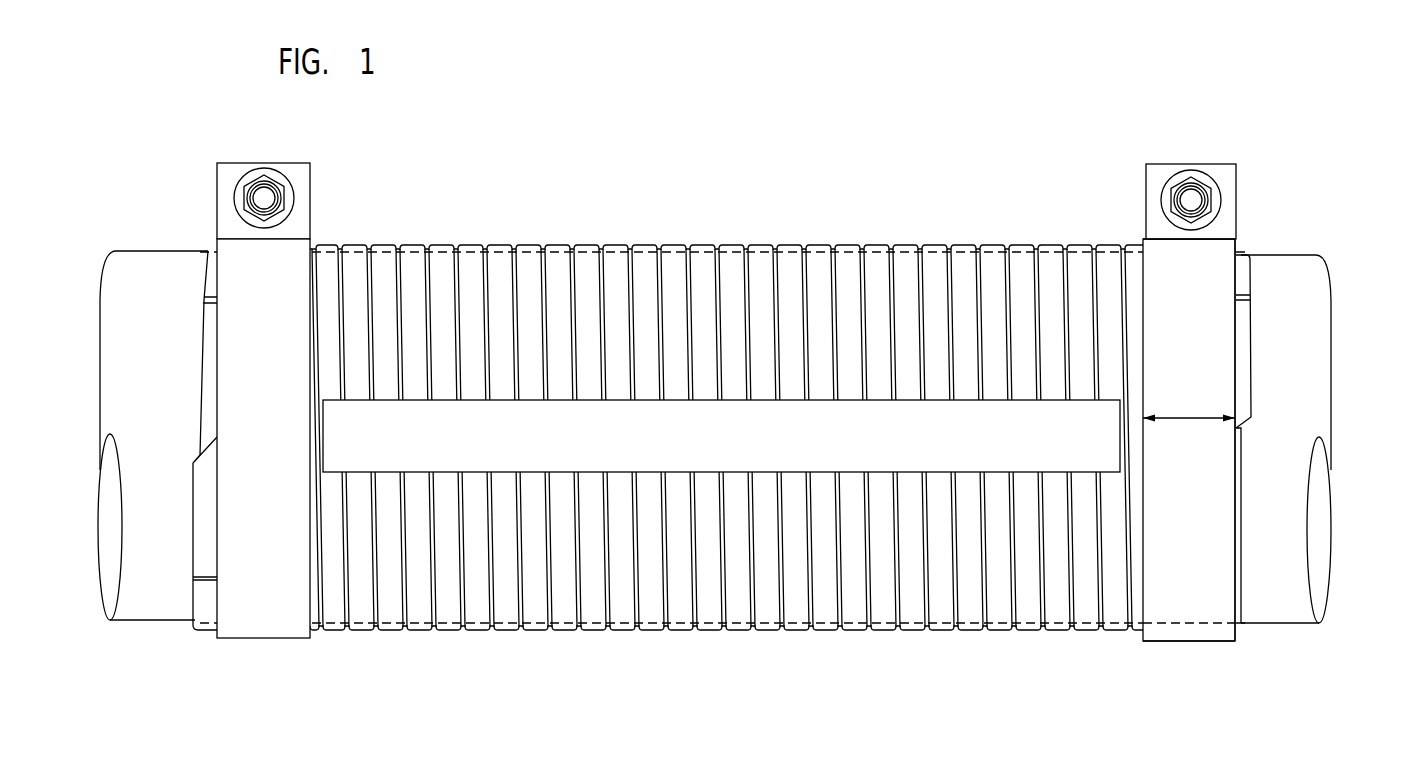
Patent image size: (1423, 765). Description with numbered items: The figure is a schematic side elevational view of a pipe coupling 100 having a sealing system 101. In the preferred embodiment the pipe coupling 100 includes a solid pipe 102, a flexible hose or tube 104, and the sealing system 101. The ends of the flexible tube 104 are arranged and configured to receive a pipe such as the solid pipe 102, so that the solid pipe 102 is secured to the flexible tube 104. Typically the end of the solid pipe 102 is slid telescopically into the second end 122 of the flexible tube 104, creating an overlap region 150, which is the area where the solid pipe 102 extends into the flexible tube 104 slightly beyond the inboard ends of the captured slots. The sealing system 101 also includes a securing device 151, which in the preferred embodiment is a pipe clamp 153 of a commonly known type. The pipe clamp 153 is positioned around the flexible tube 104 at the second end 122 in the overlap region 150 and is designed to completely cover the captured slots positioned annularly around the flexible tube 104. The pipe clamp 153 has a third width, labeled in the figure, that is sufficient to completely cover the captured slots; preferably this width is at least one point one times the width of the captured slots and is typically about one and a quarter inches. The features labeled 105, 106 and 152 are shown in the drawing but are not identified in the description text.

The pipe coupling 100 is at (1266, 126).
The sealing system 101 is at (1136, 649).
The solid pipe 102 is at (164, 282).
The flexible hose or tube 104 is at (920, 270).
The second end of corrugated hose 105 is at (1226, 651).
The bolt 106 is at (1193, 258).
The second end 122 is at (1252, 396).
The overlap region 150 is at (1208, 583).
The securing device 151 is at (1218, 295).
The lower clamp portion 152 is at (1188, 498).
The pipe clamp 153 is at (1218, 360).